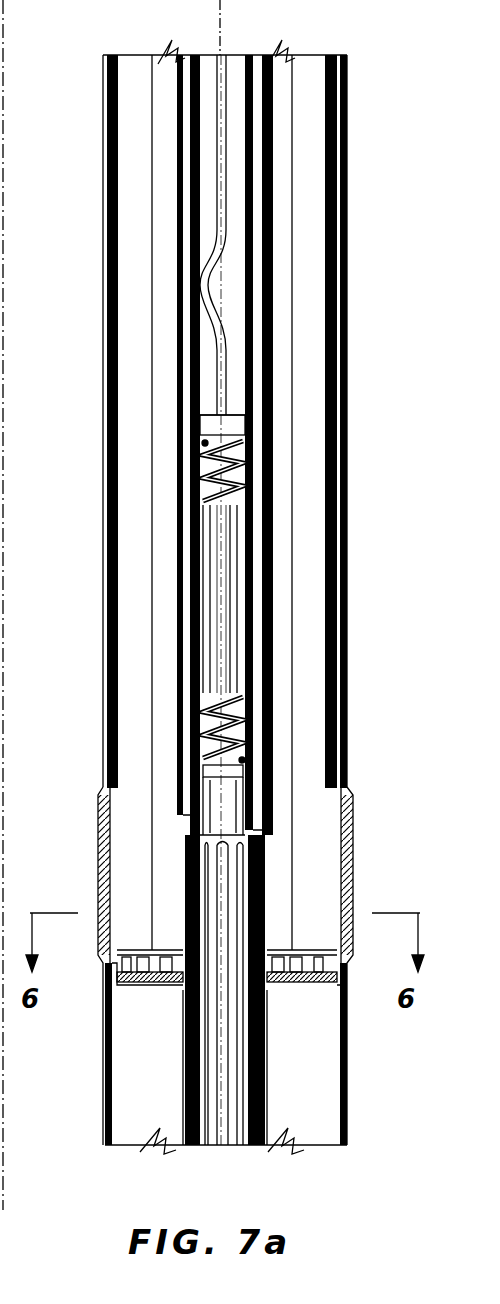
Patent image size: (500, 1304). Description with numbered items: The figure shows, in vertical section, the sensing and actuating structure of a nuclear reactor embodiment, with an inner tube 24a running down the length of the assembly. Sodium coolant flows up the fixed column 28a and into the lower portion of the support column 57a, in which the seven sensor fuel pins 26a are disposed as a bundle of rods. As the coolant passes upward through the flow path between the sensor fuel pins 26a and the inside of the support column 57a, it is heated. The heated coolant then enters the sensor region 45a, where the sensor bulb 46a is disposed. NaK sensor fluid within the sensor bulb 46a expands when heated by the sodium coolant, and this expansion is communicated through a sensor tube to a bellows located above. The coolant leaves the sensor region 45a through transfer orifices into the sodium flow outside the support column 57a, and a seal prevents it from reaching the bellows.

The inner tubing 24a is at (270, 755).
The sensor fuel pins 26a is at (237, 1060).
The fixed column 28a is at (263, 1083).
The sensor region 45a is at (210, 780).
The sensor bulb 46a is at (197, 704).
The support column 57a is at (263, 1108).